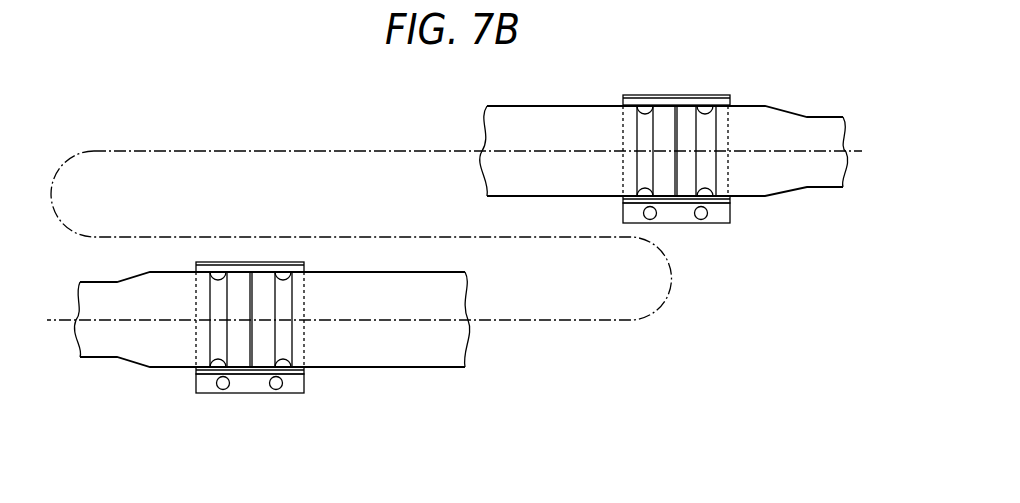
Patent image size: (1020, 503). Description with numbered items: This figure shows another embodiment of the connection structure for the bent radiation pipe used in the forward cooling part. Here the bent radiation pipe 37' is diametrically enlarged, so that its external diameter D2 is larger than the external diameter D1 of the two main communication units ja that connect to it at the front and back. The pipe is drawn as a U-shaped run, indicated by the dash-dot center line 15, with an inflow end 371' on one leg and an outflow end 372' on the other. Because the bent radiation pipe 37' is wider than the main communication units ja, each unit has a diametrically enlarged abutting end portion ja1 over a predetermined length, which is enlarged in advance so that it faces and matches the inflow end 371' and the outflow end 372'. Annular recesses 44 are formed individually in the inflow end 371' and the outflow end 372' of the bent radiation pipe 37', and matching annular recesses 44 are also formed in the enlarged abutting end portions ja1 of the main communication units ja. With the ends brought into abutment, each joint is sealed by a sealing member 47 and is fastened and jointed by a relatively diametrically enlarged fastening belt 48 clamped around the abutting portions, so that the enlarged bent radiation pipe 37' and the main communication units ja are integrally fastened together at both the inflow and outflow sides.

The wire / center line 15 is at (668, 298).
The diametrically enlarged bent radiation pipe 37' is at (537, 353).
The inflow end 371' is at (271, 359).
The outflow end 372' is at (664, 131).
The annular recess 44 is at (645, 128).
The sealing member 47 is at (625, 192).
The fastening belt 48 is at (731, 95).
The diametrically enlarged abutting end portion ja1 is at (683, 190).
The main communication unit ja is at (807, 208).
The external diameter of main communication unit D1 is at (825, 187).
The external diameter of bent radiation pipe D2 is at (410, 367).